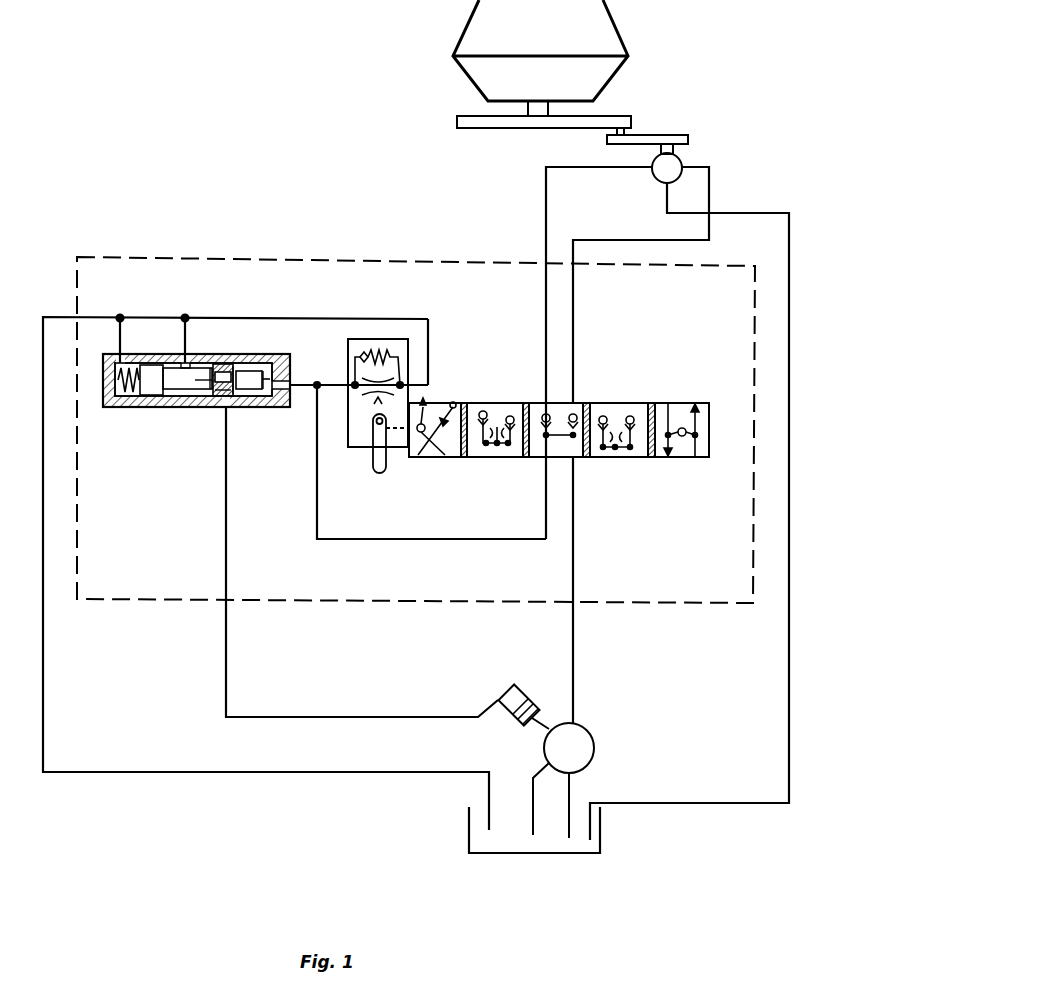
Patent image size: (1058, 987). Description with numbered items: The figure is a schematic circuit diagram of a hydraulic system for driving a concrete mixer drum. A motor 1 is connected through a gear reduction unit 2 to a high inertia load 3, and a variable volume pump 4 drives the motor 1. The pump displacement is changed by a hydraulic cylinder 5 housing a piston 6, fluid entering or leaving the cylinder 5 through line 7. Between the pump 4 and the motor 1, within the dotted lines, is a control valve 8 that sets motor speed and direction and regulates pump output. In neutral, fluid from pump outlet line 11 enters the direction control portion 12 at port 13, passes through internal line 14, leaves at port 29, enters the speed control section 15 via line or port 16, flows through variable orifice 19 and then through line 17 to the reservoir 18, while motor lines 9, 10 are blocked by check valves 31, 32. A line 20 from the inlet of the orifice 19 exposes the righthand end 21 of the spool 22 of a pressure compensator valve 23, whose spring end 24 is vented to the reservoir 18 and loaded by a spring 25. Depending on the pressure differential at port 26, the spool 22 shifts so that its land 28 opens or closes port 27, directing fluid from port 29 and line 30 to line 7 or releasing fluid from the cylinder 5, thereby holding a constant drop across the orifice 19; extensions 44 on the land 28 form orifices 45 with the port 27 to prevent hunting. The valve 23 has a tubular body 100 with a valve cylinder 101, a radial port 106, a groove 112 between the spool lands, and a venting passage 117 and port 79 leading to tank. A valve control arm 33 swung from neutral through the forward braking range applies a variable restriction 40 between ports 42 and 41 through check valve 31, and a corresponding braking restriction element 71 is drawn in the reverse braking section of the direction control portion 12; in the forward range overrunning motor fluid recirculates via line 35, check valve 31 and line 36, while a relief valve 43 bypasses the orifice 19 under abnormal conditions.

The motor 1 is at (657, 180).
The gear reduction unit 2 is at (645, 132).
The high inertia load 3 is at (632, 52).
The variable volume pump 4 is at (595, 735).
The hydraulic cylinder 5 is at (517, 683).
The piston 6 is at (540, 710).
The line 7 is at (227, 557).
The control valve 8 is at (677, 608).
The motor line 9 is at (712, 178).
The motor line 10 is at (548, 205).
The pump outlet line 11 is at (575, 582).
The direction control portion 12 is at (710, 460).
The port 13 is at (576, 462).
The internal line 14 is at (543, 462).
The speed control section 15 is at (346, 458).
The line or port 16 is at (326, 383).
The line 17 is at (332, 318).
The reservoir 18 is at (527, 856).
The variable orifice 19 is at (360, 396).
The line 20 is at (305, 393).
The righthand end 21 is at (267, 368).
The spool 22 is at (188, 392).
The pressure compensator valve 23 is at (158, 415).
The spring end 24 is at (148, 370).
The spring 25 is at (130, 387).
The port 26 is at (285, 377).
The port 27 is at (223, 395).
The land 28 is at (227, 367).
The port 29 is at (540, 458).
The line 30 is at (437, 540).
The check valve 31 is at (510, 404).
The check valve 32 is at (482, 410).
The valve control arm 33 is at (377, 470).
The line 35 is at (458, 402).
The line 36 is at (425, 400).
The variable restriction 40 is at (613, 450).
The port 41 is at (575, 403).
The port 42 is at (547, 403).
The relief valve 43 is at (378, 350).
The extensions 44 is at (190, 370).
The orifices 45 is at (207, 395).
The brake valve 71 is at (486, 437).
The port 79 is at (413, 382).
The tubular body 100 is at (150, 407).
The valve cylinder 101 is at (270, 408).
The radial port 106 is at (182, 355).
The groove 112 is at (193, 360).
The passage 117 is at (187, 318).